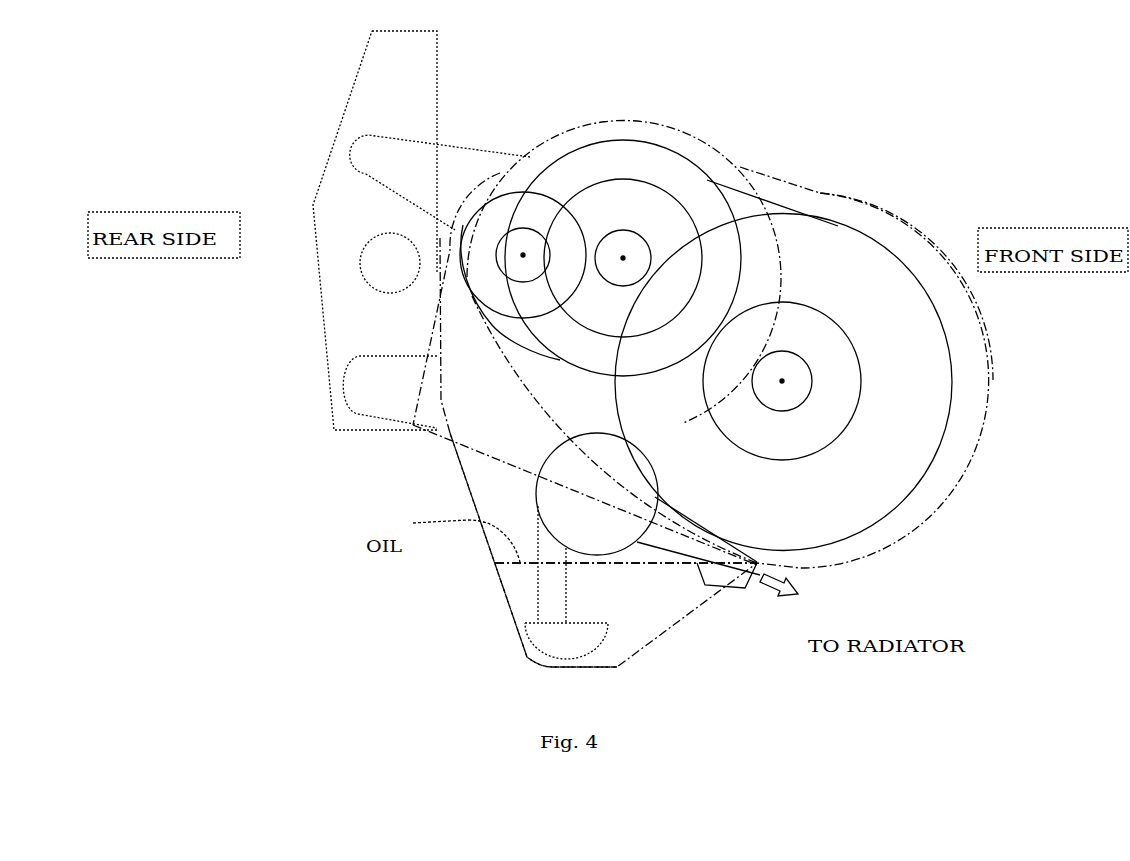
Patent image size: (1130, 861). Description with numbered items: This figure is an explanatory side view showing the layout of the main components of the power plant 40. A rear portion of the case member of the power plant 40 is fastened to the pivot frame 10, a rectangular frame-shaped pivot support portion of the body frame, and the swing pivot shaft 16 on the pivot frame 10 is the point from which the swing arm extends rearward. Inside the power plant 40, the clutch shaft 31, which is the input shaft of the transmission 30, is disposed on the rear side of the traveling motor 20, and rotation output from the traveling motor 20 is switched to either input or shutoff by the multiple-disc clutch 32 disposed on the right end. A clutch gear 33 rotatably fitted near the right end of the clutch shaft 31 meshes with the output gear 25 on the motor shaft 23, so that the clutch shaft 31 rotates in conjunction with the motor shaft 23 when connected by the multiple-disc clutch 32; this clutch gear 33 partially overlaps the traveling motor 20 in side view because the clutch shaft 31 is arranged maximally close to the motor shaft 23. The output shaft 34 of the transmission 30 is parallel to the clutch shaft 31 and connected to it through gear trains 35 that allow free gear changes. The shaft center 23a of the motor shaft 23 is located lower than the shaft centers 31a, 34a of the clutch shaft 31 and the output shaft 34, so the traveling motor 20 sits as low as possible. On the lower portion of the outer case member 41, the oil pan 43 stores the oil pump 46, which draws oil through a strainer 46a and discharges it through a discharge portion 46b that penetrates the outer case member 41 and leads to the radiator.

The pivot frame 10 is at (350, 98).
The swing pivot shaft 16 is at (360, 263).
The traveling motor 20 is at (905, 262).
The motor shaft 23 is at (807, 400).
The shaft center of the motor shaft 23a is at (785, 382).
The output gear 25 is at (860, 357).
The transmission 30 is at (583, 141).
The clutch shaft 31 is at (647, 237).
The shaft center of the clutch shaft 31a is at (623, 255).
The multiple-disc clutch 32 is at (653, 183).
The clutch gear 33 is at (627, 140).
The output shaft 34 is at (527, 228).
The shaft center of the output shaft 34a is at (527, 244).
The gear trains 35 is at (507, 193).
The power plant 40 is at (853, 197).
The outer case member 41 is at (897, 214).
The oil pan 43 is at (507, 600).
The oil pump 46 is at (548, 455).
The strainer 46a is at (573, 590).
The discharge portion 46b is at (703, 565).